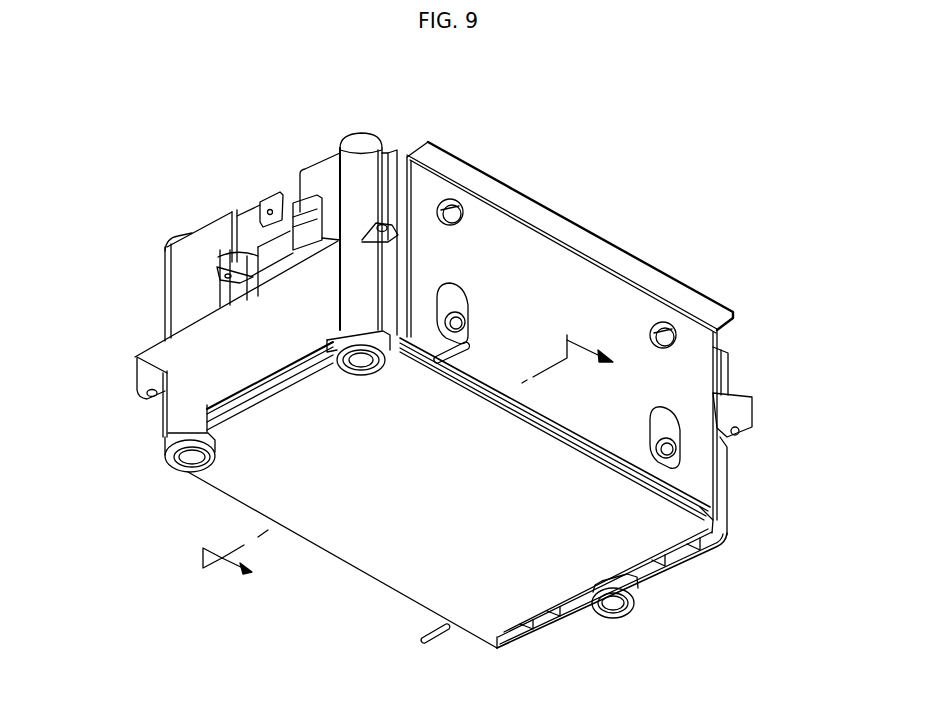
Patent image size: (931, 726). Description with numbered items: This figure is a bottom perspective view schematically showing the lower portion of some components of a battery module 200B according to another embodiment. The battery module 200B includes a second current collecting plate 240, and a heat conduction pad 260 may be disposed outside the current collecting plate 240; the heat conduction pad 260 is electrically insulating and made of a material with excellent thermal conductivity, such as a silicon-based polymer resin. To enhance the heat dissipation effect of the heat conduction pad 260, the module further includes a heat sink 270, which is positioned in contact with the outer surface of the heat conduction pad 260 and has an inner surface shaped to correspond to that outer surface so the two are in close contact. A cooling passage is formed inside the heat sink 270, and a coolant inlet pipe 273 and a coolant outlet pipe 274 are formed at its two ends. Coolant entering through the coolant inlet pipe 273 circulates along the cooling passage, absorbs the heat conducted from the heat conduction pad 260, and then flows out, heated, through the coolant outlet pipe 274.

The battery module 200B is at (292, 88).
The second current collecting plate 240 is at (697, 480).
The heat conduction pad 260 is at (233, 398).
The heat sink 270 is at (373, 582).
The coolant inlet pipe 273 is at (420, 643).
The coolant outlet pipe 274 is at (468, 347).